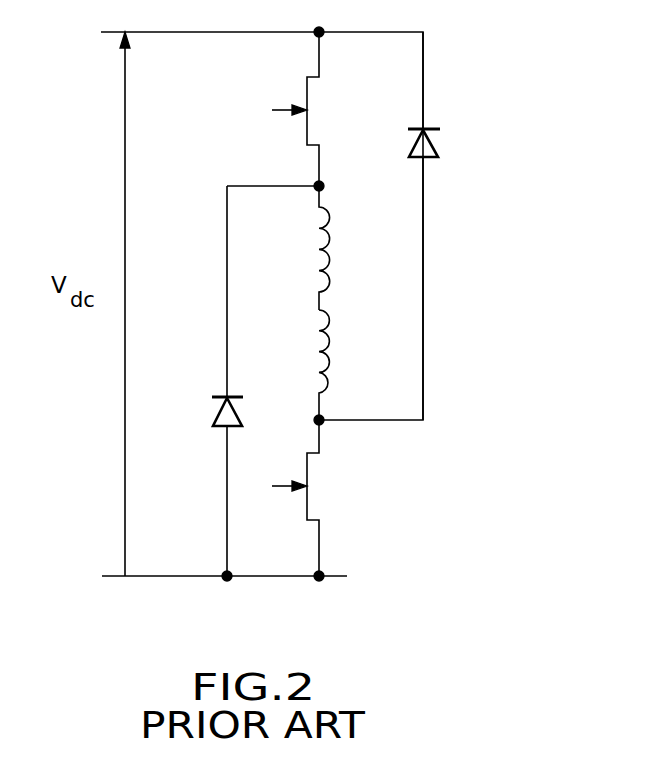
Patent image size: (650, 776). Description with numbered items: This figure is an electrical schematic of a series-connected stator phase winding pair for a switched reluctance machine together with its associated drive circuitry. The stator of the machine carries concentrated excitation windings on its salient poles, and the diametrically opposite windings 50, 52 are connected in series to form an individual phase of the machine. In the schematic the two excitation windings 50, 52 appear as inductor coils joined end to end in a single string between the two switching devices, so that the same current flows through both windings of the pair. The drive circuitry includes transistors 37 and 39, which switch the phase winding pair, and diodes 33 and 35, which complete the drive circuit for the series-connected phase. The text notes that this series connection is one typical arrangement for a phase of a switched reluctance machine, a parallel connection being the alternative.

The diode 33 is at (227, 397).
The diode 35 is at (423, 128).
The transistor 37 is at (307, 98).
The transistor 39 is at (307, 469).
The excitation winding 50 is at (328, 233).
The excitation winding 52 is at (328, 338).